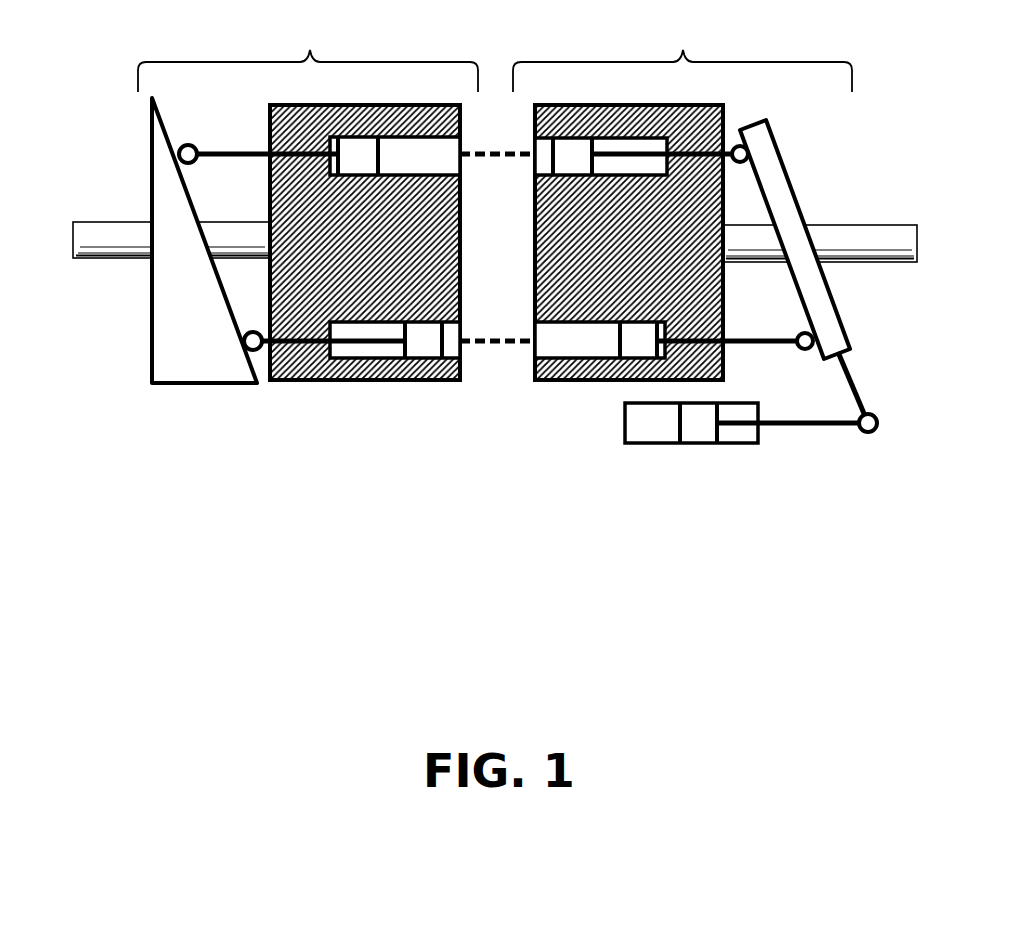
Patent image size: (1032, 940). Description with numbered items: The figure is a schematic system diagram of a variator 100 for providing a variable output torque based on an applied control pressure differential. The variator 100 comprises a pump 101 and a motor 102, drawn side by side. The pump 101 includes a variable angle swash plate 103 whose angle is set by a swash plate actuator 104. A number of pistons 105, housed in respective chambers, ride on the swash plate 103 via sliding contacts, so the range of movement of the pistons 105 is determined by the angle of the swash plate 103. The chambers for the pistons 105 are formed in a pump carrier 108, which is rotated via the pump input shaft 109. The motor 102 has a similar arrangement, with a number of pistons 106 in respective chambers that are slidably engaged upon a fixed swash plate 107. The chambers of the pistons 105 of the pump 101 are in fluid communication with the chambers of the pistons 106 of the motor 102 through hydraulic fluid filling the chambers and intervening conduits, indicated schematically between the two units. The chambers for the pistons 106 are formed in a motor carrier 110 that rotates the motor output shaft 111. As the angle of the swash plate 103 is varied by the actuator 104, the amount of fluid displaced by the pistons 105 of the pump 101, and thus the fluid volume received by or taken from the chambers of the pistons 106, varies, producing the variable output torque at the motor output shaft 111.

The variator 100 is at (583, 588).
The pump 101 is at (682, 46).
The motor 102 is at (308, 46).
The variable angle swash plate 103 is at (818, 300).
The swash plate actuator 104 is at (708, 452).
The pistons 105 is at (577, 167).
The pistons 106 is at (367, 165).
The fixed swash plate 107 is at (212, 373).
The pump carrier 108 is at (567, 385).
The pump input shaft 109 is at (885, 238).
The motor carrier 110 is at (417, 375).
The motor output shaft 111 is at (90, 230).